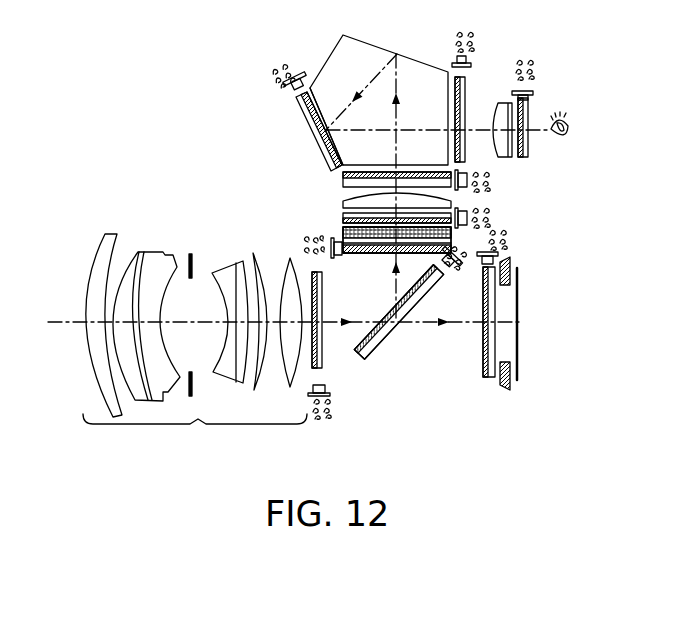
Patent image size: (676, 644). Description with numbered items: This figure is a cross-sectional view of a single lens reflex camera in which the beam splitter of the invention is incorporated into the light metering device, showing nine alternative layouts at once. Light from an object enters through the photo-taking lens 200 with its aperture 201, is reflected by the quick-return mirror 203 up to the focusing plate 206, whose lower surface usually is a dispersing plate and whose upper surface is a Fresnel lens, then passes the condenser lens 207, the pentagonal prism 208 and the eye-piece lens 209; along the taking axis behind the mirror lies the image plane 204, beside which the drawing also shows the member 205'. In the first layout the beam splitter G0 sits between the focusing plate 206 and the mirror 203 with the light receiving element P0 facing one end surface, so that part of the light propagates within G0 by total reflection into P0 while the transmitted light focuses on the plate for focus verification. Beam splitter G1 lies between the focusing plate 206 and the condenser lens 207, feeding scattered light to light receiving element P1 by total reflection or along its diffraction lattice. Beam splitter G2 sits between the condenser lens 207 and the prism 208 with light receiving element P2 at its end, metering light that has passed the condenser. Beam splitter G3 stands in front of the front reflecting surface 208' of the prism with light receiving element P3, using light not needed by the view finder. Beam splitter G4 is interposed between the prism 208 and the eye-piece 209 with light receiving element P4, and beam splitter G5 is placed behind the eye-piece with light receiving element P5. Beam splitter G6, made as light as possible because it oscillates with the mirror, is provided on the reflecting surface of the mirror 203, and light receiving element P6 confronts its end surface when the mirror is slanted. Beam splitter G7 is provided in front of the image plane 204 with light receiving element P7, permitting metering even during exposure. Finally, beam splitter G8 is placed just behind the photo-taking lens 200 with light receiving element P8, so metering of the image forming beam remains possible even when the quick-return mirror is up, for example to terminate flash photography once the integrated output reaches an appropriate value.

The photo-taking lens 200 is at (195, 344).
The aperture 201 is at (203, 238).
The mirror 203 is at (382, 352).
The image plane 204 is at (518, 332).
The holding members 205' is at (524, 342).
The focusing plate 206 is at (343, 237).
The condenser lens 207 is at (343, 203).
The pentagonal prism 208 is at (379, 82).
The front reflecting surface of the pentagonal prism 208' is at (314, 103).
The eye-piece lens 209 is at (500, 152).
The beam splitter G0 is at (372, 254).
The beam splitter G1 is at (343, 218).
The beam splitter G2 is at (342, 180).
The beam splitter G3 is at (300, 118).
The beam splitter G4 is at (466, 90).
The beam splitter G5 is at (529, 113).
The beam splitter G6 is at (360, 347).
The beam splitter G7 is at (485, 370).
The beam splitter G8 is at (311, 372).
The light receiving element P0 is at (333, 259).
The light receiving element P1 is at (468, 215).
The light receiving element P2 is at (470, 180).
The light receiving element P3 is at (285, 92).
The light receiving element P4 is at (455, 64).
The light receiving element P5 is at (530, 91).
The light receiving element P6 is at (447, 278).
The light receiving element P7 is at (503, 256).
The light receiving element P8 is at (330, 395).